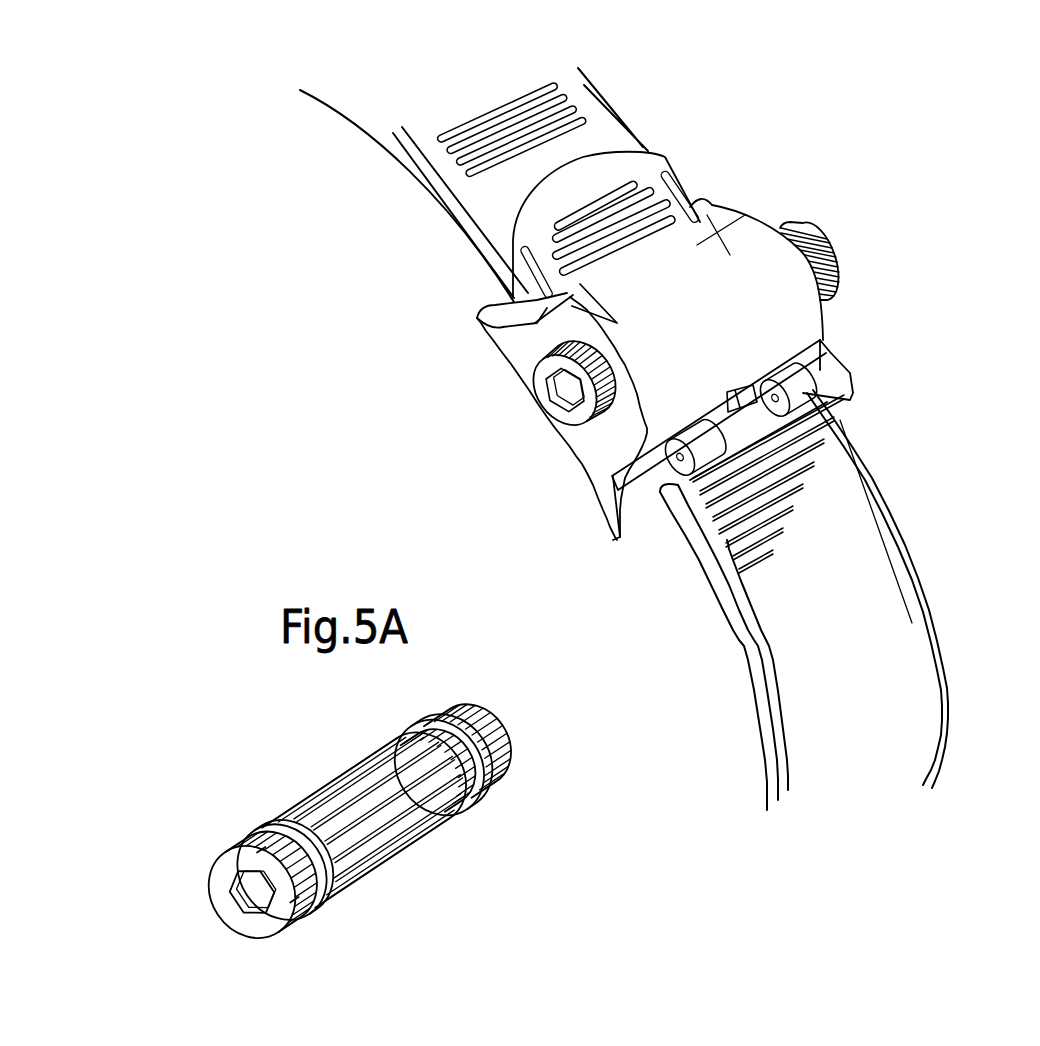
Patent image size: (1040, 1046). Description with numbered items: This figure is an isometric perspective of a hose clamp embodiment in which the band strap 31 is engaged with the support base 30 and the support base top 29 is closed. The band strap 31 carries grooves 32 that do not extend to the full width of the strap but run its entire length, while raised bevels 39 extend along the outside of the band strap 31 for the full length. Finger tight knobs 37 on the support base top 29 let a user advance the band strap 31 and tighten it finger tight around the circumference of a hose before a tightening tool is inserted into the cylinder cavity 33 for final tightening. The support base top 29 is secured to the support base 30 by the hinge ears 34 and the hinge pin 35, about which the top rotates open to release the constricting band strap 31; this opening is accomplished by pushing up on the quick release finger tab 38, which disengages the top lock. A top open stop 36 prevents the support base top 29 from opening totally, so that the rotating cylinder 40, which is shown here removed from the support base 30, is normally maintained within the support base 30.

The support base top 29 is at (762, 314).
The support base 30 is at (527, 345).
The band strap 31 is at (810, 623).
The grooves 32 is at (700, 518).
The cylinder cavity 33 is at (557, 390).
The hinge ears 34 is at (793, 390).
The hinge pin 35 is at (680, 458).
The top open stop 36 is at (745, 403).
The finger tight knobs 37 is at (835, 234).
The quick release finger tab 38 is at (697, 228).
The raised bevels 39 is at (773, 707).
The rotating cylinder 40 is at (313, 783).